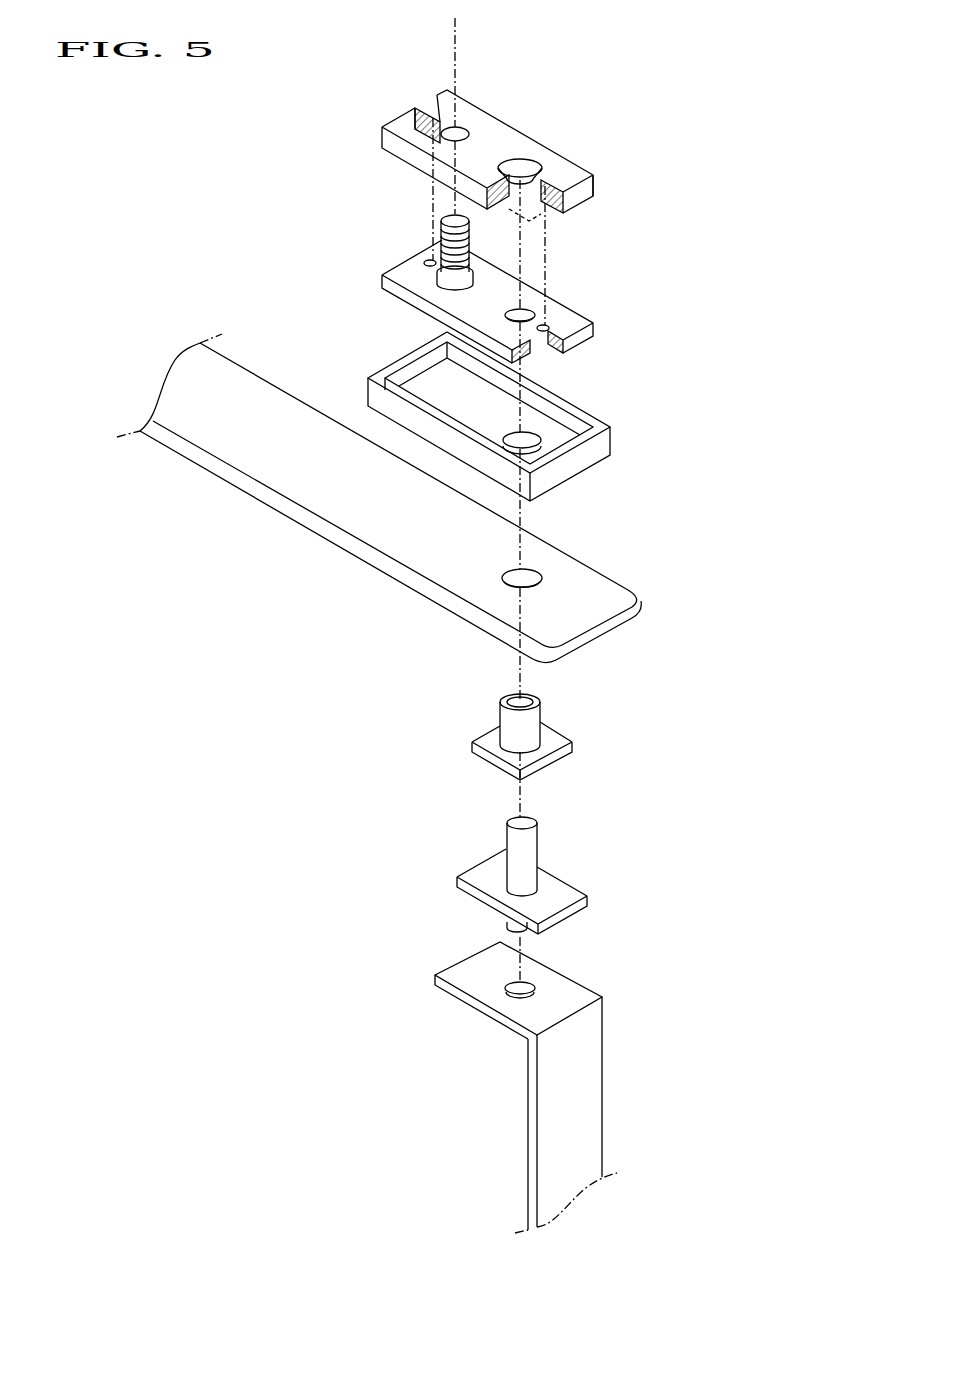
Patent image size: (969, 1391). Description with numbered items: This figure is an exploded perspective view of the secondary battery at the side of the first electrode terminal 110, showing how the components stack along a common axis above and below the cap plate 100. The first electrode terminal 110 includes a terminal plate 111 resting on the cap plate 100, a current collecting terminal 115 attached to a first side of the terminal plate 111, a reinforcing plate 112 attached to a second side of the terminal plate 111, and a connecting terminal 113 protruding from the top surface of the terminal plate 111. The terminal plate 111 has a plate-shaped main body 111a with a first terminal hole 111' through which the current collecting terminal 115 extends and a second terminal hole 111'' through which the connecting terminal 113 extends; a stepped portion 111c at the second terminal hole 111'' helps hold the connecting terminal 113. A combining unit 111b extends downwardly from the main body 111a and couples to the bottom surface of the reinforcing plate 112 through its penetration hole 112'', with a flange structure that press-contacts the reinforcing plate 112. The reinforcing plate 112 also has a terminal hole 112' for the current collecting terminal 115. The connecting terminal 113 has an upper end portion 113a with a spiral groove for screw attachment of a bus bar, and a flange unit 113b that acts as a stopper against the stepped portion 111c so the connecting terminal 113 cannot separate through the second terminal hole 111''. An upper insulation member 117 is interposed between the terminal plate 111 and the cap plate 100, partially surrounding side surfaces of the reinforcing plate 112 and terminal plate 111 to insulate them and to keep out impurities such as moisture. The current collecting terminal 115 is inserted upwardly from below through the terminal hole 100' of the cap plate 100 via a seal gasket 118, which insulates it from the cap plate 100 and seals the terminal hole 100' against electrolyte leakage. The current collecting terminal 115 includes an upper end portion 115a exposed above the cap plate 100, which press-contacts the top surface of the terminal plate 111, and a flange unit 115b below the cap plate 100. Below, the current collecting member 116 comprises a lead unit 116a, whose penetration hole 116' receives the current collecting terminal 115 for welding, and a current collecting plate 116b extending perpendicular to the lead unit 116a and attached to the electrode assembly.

The first electrode terminal 110 is at (401, 93).
The terminal plate 111 is at (502, 150).
The first terminal hole 111' is at (533, 137).
The second terminal hole 111'' is at (482, 93).
The main body 111a is at (597, 188).
The combining unit 111b is at (437, 141).
The stepped portion 111c is at (413, 115).
The reinforcing plate 112 is at (554, 310).
The terminal hole 112' is at (611, 287).
The penetration hole 112'' is at (619, 352).
The connecting terminal 113 is at (295, 223).
The upper end portion 113a is at (443, 233).
The flange unit 113b is at (438, 279).
The upper insulation member 117 is at (607, 444).
The cap plate 100 is at (405, 498).
The terminal hole 100' is at (563, 544).
The seal gasket 118 is at (558, 738).
The current collecting terminal 115 is at (680, 800).
The upper end portion 115a is at (533, 842).
The flange unit 115b is at (572, 890).
The current collecting member 116 is at (590, 1087).
The penetration hole 116' is at (497, 1028).
The lead unit 116a is at (568, 992).
The current collecting plate 116b is at (585, 1053).